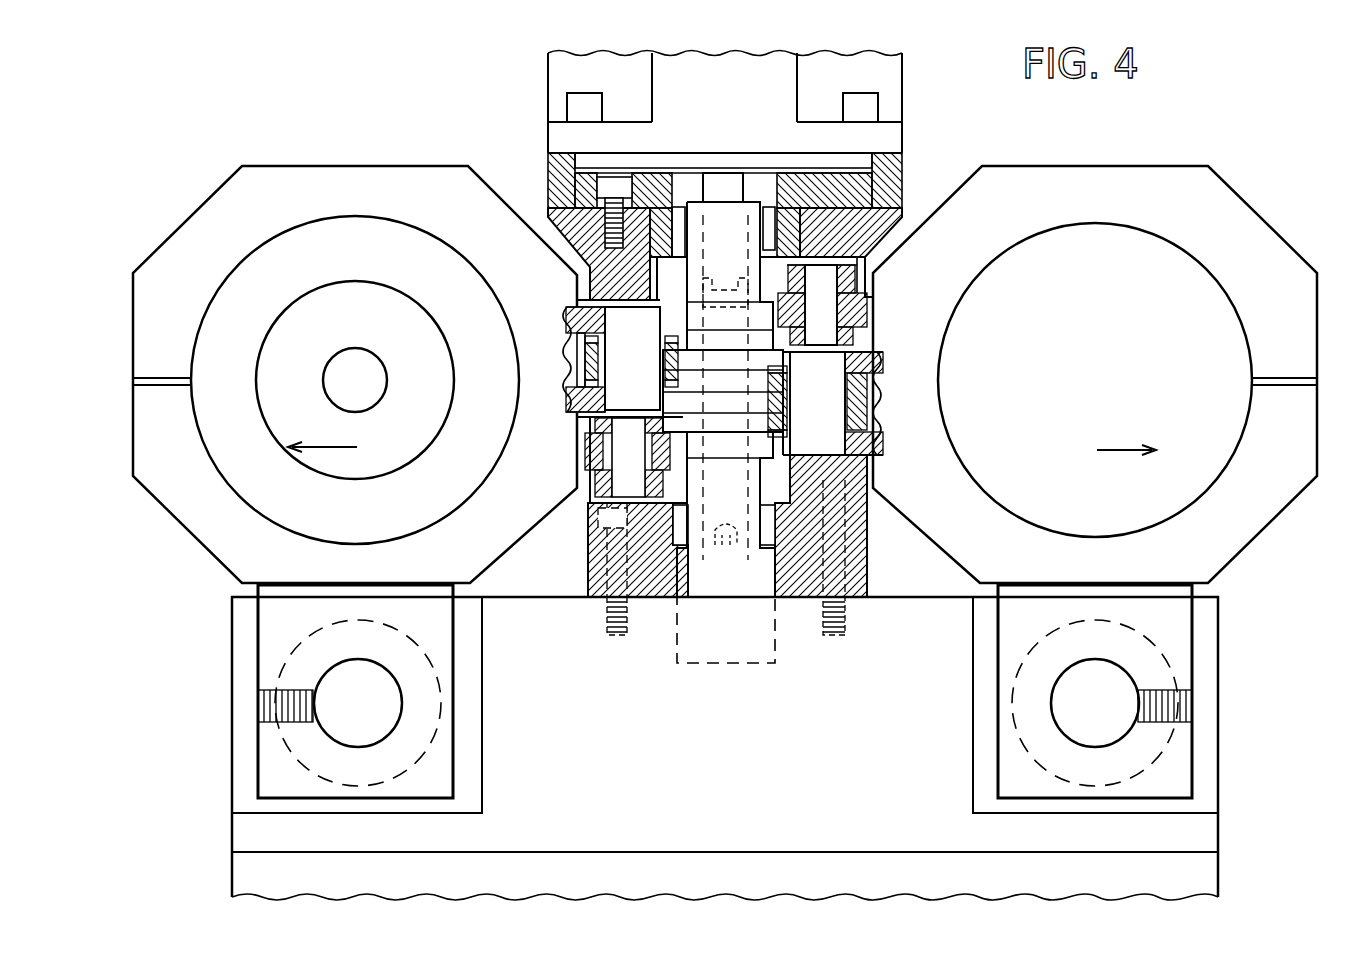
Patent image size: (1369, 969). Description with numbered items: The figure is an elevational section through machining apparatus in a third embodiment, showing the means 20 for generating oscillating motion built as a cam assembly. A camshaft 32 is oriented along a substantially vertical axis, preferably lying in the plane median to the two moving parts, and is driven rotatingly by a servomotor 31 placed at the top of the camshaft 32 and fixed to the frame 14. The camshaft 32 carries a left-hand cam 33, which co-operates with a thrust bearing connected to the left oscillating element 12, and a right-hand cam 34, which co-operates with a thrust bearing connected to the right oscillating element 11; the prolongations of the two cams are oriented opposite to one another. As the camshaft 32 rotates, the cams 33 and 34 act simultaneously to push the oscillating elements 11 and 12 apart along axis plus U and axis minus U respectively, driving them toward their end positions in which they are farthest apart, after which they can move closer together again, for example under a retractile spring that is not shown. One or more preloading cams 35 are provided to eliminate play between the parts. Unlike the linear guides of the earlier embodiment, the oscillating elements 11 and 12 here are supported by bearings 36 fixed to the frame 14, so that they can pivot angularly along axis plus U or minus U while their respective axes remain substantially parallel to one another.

The oscillating element 11 is at (1107, 203).
The oscillating element 12 is at (372, 203).
The frame 14 is at (1192, 832).
The means for generating oscillating motion 20 is at (772, 193).
The servomotor 31 is at (742, 93).
The camshaft 32 is at (691, 222).
The left-hand cam 33 is at (765, 361).
The right-hand cam 34 is at (768, 400).
The preloading cams 35 is at (758, 317).
The bearings 36 is at (406, 736).